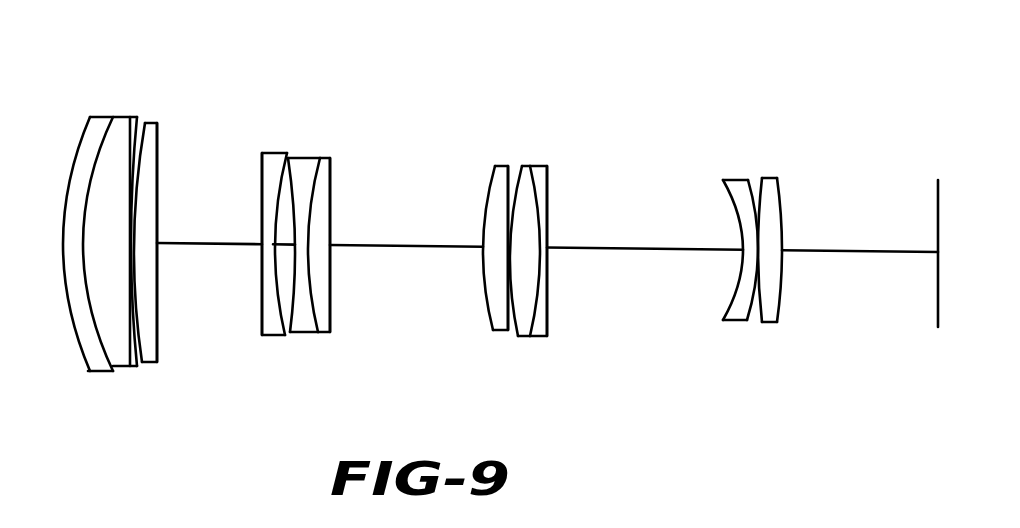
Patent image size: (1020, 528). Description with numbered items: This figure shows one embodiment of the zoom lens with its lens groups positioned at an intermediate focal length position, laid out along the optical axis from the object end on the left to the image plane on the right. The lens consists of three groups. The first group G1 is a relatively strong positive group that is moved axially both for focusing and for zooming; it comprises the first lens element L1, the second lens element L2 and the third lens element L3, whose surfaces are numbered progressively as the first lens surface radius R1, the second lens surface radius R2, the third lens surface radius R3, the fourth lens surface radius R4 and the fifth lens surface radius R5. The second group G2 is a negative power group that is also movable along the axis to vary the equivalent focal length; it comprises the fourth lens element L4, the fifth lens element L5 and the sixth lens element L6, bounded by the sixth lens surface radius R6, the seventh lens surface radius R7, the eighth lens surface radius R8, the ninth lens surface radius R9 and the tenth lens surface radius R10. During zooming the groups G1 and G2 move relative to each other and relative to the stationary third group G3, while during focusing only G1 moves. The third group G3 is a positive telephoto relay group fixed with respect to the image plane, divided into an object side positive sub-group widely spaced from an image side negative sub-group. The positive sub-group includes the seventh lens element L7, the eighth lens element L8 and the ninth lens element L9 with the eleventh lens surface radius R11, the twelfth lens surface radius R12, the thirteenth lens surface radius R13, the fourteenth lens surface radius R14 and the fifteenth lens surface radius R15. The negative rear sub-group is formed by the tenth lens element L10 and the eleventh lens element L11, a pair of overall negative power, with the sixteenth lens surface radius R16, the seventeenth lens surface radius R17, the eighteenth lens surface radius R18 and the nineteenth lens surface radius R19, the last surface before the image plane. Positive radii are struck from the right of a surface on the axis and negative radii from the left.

The first group G1 is at (158, 50).
The second group G2 is at (332, 87).
The third group G3 is at (782, 127).
The first lens element L1 is at (92, 257).
The second lens element L2 is at (137, 263).
The third lens element L3 is at (173, 262).
The fourth lens element L4 is at (256, 251).
The fifth lens element L5 is at (314, 256).
The sixth lens element L6 is at (355, 236).
The seventh lens element L7 is at (471, 247).
The eighth lens element L8 is at (521, 259).
The ninth lens element L9 is at (572, 247).
The tenth lens element L10 is at (721, 255).
The eleventh lens element L11 is at (793, 264).
The first lens surface radius R1 is at (80, 353).
The second lens surface radius R2 is at (105, 358).
The third lens surface radius R3 is at (128, 352).
The fourth lens surface radius R4 is at (140, 360).
The fifth lens surface radius R5 is at (158, 342).
The sixth lens surface radius R6 is at (263, 310).
The seventh lens surface radius R7 is at (282, 312).
The eighth lens surface radius R8 is at (295, 323).
The ninth lens surface radius R9 is at (307, 315).
The tenth lens surface radius R10 is at (332, 312).
The eleventh lens surface radius R11 is at (483, 287).
The twelfth lens surface radius R12 is at (507, 312).
The thirteenth lens surface radius R13 is at (513, 327).
The fourteenth lens surface radius R14 is at (533, 317).
The fifteenth lens surface radius R15 is at (548, 322).
The sixteenth lens surface radius R16 is at (738, 287).
The seventeenth lens surface radius R17 is at (745, 313).
The eighteenth lens surface radius R18 is at (758, 320).
The nineteenth lens surface radius R19 is at (778, 313).